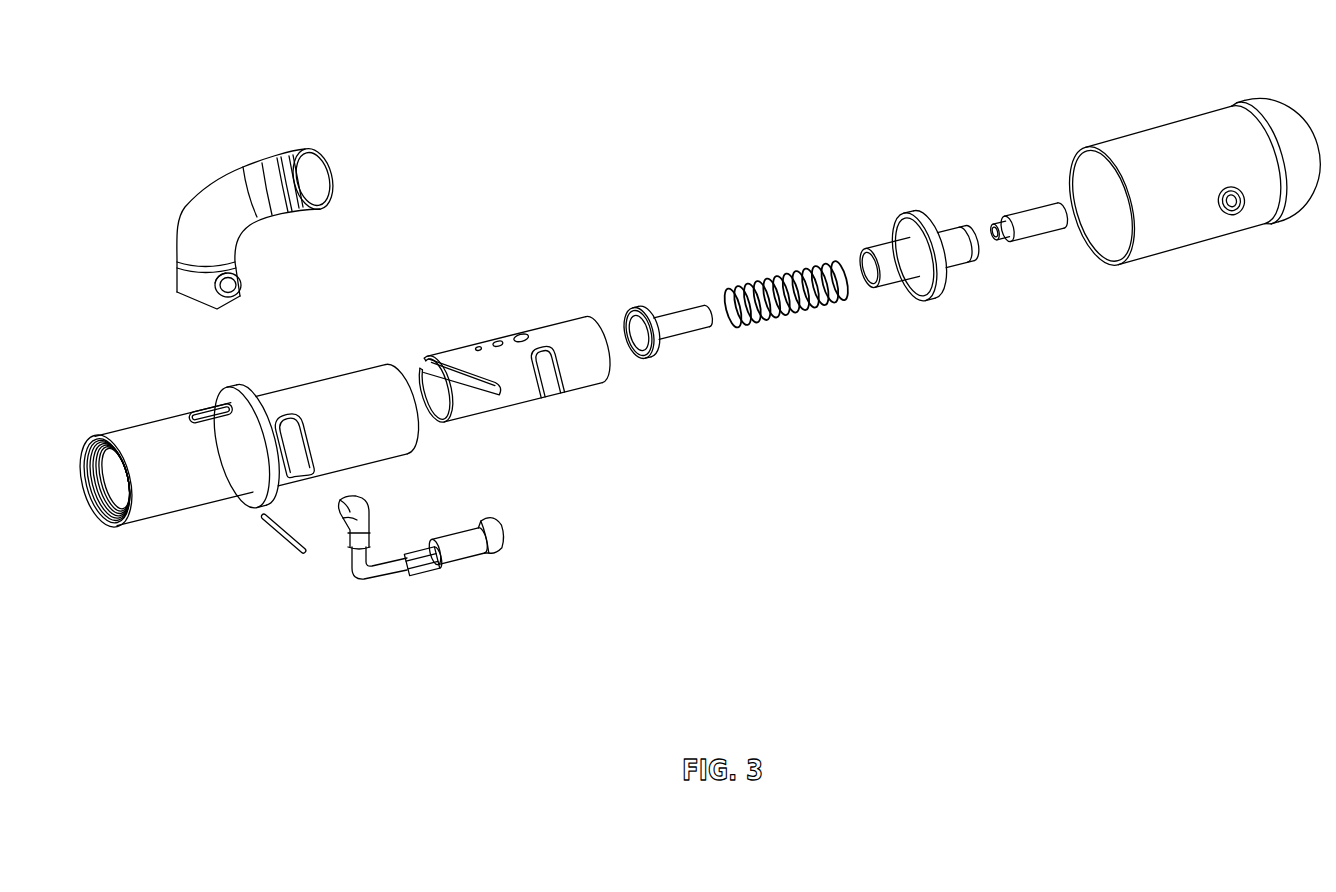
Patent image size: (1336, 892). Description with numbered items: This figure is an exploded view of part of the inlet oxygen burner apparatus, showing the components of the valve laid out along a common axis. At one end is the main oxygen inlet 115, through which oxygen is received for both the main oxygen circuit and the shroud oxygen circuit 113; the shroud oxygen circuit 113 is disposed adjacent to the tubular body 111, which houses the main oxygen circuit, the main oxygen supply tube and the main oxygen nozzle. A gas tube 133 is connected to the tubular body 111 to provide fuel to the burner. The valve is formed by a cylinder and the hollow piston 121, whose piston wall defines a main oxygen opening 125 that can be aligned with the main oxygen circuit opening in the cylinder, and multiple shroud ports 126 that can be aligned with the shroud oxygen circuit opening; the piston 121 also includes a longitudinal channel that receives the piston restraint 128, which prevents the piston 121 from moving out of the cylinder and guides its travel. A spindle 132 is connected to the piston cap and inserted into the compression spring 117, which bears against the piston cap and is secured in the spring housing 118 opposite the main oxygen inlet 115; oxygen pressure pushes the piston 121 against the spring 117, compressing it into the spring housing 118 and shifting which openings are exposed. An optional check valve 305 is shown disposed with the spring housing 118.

The tubular body 111 is at (1187, 243).
The shroud oxygen circuit 113 is at (231, 170).
The main oxygen inlet 115 is at (303, 383).
The compression spring 117 is at (795, 330).
The spring housing 118 is at (935, 298).
The hollow piston 121 is at (519, 373).
The main oxygen opening 125 is at (548, 397).
The shroud ports 126 is at (523, 327).
The piston restraint 128 is at (280, 535).
The spindle 132 is at (672, 340).
The gas tube 133 is at (467, 567).
The check valve 305 is at (1023, 240).